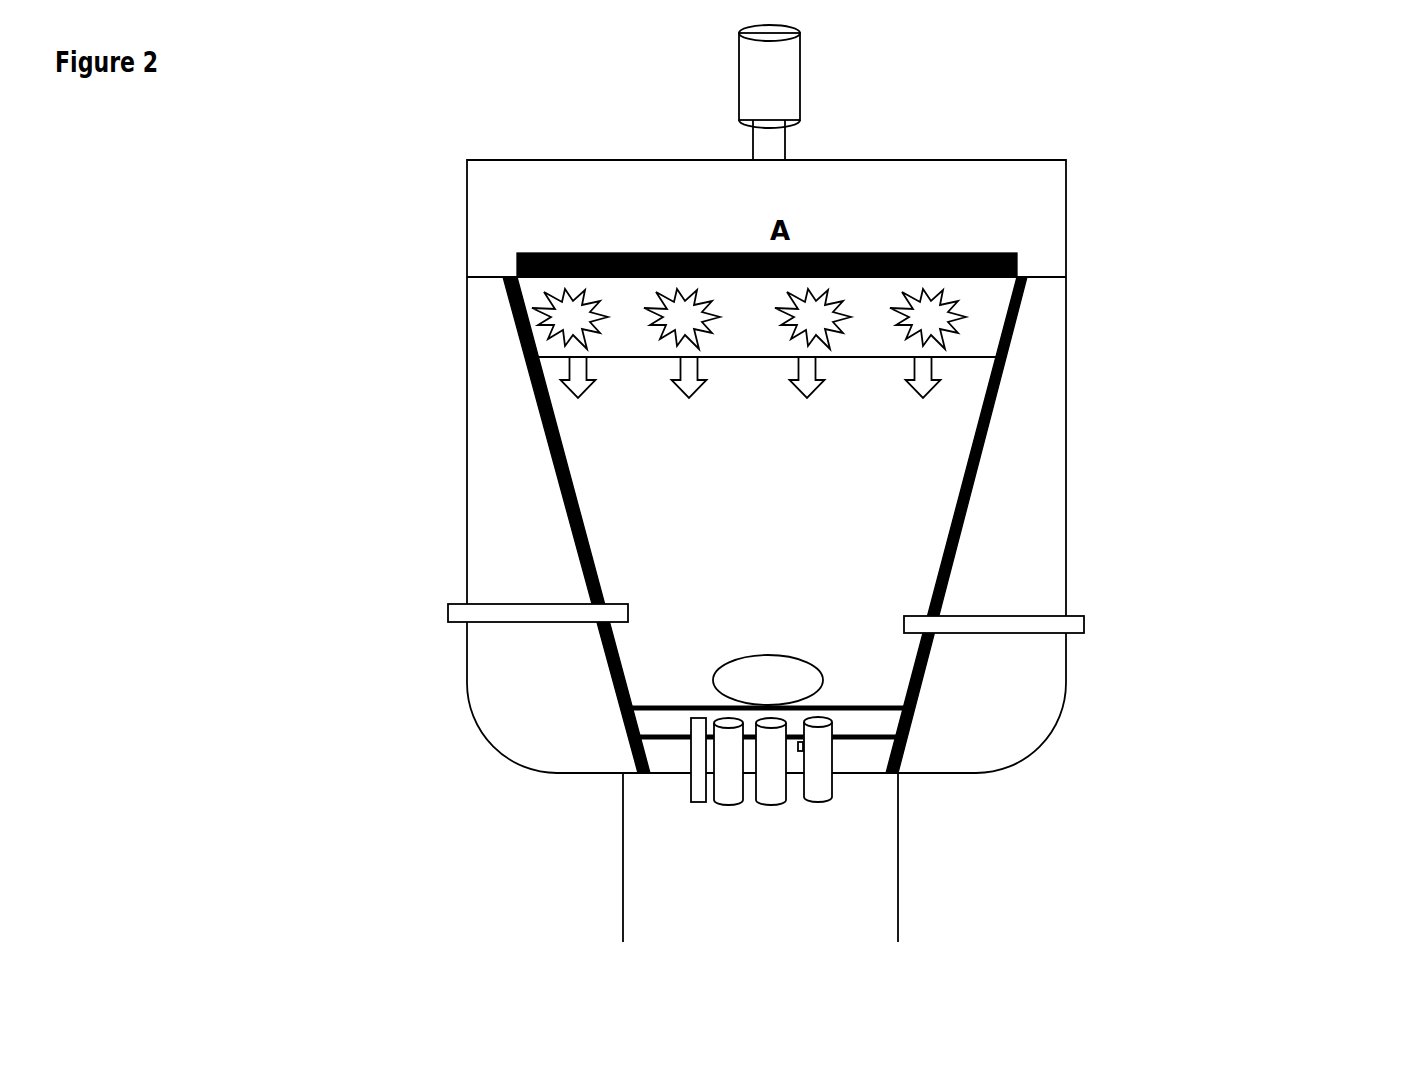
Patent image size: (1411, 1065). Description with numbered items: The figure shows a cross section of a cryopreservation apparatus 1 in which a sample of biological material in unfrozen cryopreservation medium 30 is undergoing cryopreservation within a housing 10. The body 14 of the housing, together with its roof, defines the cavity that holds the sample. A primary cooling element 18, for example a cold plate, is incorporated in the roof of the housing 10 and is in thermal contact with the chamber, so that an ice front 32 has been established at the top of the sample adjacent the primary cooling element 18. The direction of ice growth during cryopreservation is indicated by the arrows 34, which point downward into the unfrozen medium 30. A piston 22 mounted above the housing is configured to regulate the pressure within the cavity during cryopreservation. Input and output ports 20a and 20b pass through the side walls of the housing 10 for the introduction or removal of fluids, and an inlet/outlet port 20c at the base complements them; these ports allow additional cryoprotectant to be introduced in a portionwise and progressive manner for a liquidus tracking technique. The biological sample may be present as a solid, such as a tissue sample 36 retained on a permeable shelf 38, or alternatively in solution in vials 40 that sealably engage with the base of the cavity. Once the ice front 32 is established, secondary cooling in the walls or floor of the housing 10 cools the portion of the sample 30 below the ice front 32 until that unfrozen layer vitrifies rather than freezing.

The apparatus 1 is at (1205, 288).
The housing 10 is at (467, 377).
The body 14 is at (765, 525).
The primary cooling element 18 is at (940, 252).
The input port 20a is at (499, 621).
The output port 20b is at (1034, 628).
The inlet/outlet port 20c is at (697, 803).
The piston 22 is at (802, 92).
The unfrozen cryopreservation medium 30 is at (766, 533).
The ice front 32 is at (769, 319).
The arrows 34 is at (751, 394).
The tissue sample 36 is at (768, 680).
The permeable shelf 38 is at (746, 717).
The vials 40 is at (818, 807).